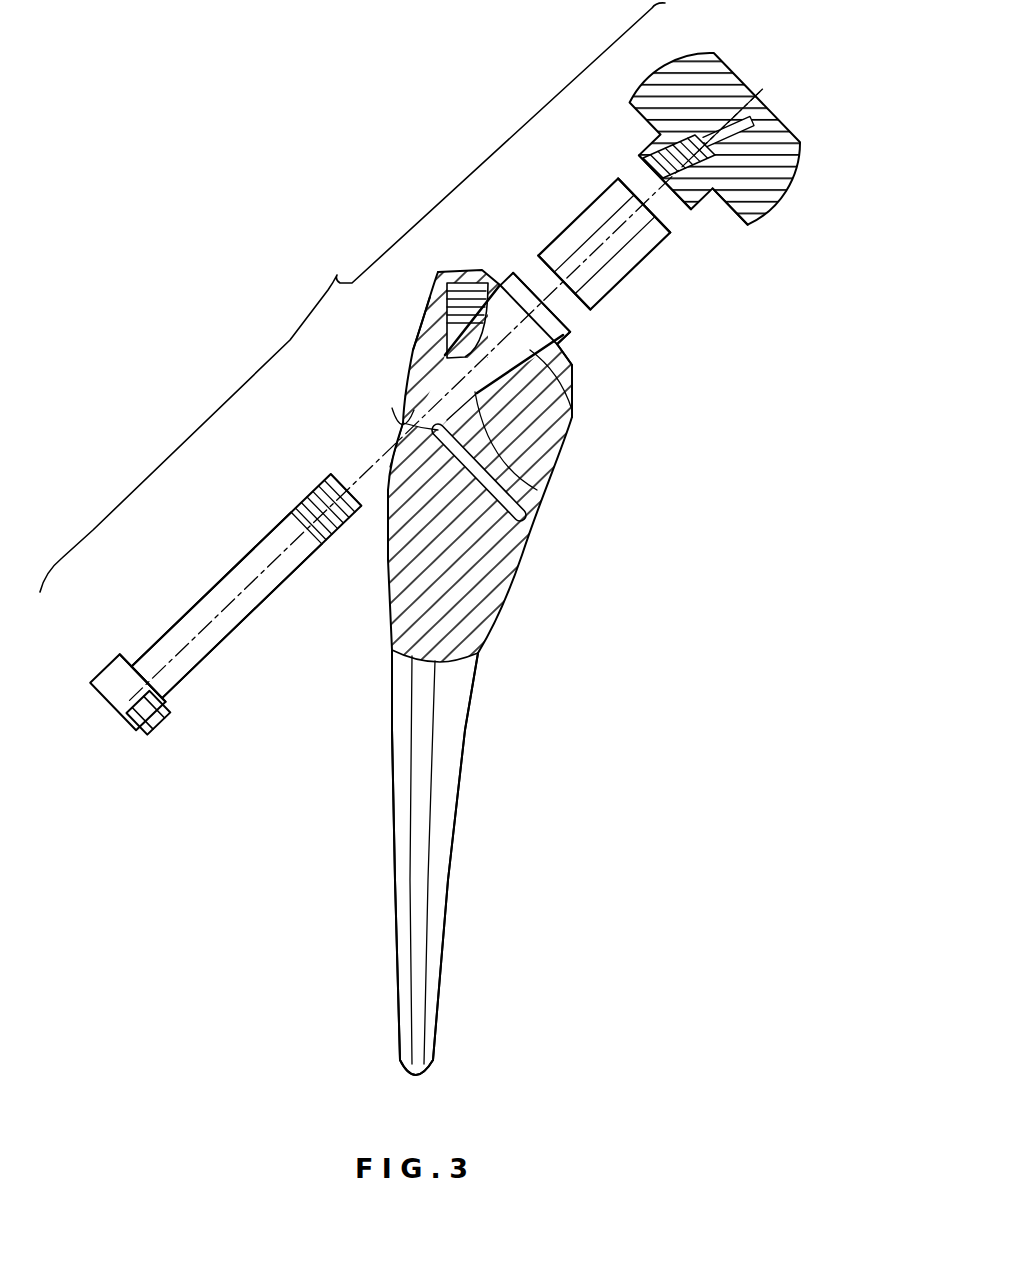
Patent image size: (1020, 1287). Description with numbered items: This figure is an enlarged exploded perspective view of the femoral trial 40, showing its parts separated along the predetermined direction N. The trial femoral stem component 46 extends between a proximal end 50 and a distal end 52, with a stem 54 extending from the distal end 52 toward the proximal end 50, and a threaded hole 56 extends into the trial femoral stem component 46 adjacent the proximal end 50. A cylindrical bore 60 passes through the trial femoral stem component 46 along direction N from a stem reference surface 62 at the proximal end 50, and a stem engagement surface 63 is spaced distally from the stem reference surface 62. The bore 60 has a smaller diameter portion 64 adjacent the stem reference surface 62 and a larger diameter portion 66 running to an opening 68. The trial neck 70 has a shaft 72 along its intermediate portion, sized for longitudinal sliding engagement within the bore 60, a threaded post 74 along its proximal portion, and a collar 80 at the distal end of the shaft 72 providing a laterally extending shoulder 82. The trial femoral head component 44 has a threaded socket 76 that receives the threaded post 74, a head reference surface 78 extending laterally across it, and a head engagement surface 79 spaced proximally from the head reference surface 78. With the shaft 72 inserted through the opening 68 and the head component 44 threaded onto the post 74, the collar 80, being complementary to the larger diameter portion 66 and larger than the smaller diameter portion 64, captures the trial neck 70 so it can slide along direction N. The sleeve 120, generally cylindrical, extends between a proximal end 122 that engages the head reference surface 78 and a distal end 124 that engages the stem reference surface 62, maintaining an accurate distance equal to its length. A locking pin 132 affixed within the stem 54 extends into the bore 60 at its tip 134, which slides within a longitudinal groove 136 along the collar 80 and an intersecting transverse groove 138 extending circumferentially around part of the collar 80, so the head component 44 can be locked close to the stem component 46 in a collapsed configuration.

The femoral trial 40 is at (488, 658).
The trial femoral head component 44 is at (795, 178).
The trial femoral stem component 46 is at (448, 705).
The proximal end 50 is at (480, 292).
The distal end 52 is at (410, 1080).
The stem 54 is at (445, 795).
The threaded hole 56 is at (470, 296).
The cylindrical bore 60 is at (540, 456).
The stem reference surface 62 is at (514, 272).
The stem engagement surface 63 is at (575, 350).
The smaller diameter portion 64 is at (573, 418).
The larger diameter portion 66 is at (425, 340).
The opening 68 is at (403, 417).
The trial neck 70 is at (262, 512).
The shaft 72 is at (228, 578).
The threaded post 74 is at (323, 474).
The threaded socket 76 is at (652, 168).
The head reference surface 78 is at (690, 214).
The head engagement surface 79 is at (746, 227).
The collar 80 is at (115, 662).
The shoulder 82 is at (148, 660).
The sleeve 120 is at (640, 276).
The proximal end 122 is at (618, 178).
The distal end 124 is at (584, 313).
The locking pin 132 is at (520, 500).
The tip 134 is at (398, 440).
The longitudinal groove 136 is at (160, 708).
The transverse groove 138 is at (125, 715).
The predetermined direction N is at (770, 84).